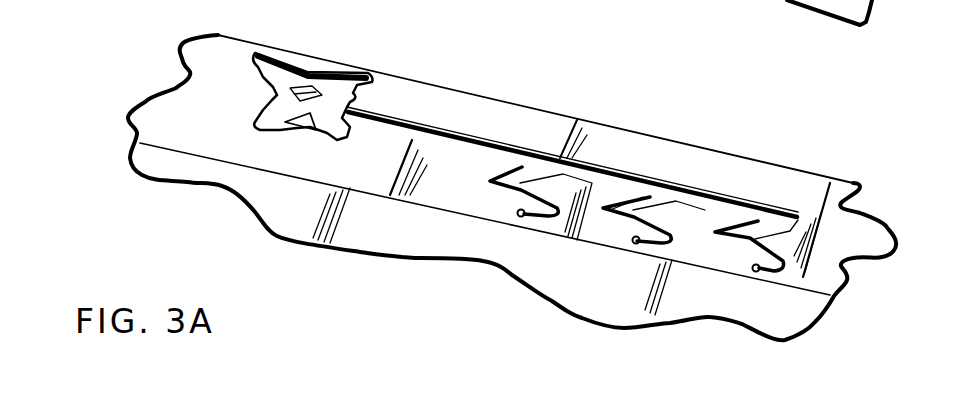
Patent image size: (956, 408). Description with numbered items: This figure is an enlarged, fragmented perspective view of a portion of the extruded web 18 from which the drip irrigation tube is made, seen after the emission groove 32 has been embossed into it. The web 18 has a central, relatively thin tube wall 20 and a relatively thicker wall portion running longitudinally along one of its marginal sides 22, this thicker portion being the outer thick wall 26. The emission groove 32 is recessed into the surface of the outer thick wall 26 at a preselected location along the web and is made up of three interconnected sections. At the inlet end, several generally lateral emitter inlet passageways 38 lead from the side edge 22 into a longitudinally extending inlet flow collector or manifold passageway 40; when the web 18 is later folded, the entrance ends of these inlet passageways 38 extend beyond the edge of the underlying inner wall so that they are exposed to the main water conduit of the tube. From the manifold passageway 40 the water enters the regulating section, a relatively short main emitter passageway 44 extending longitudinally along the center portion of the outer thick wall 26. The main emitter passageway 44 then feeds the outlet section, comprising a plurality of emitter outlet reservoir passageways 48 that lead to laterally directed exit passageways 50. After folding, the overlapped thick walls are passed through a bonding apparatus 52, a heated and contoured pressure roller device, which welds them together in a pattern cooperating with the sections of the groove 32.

The web 18 is at (207, 210).
The tube wall 20 is at (415, 247).
The marginal sides 22 is at (740, 157).
The outer thick wall 26 is at (460, 202).
The emission groove 32 is at (490, 131).
The emitter inlet passageways 38 is at (522, 216).
The inlet flow collector or manifold passageway 40 is at (613, 183).
The main emitter passageway 44 is at (423, 137).
The emitter outlet reservoir passageways 48 is at (330, 137).
The exit passageways 50 is at (273, 53).
The bonding apparatus 52 is at (814, 25).